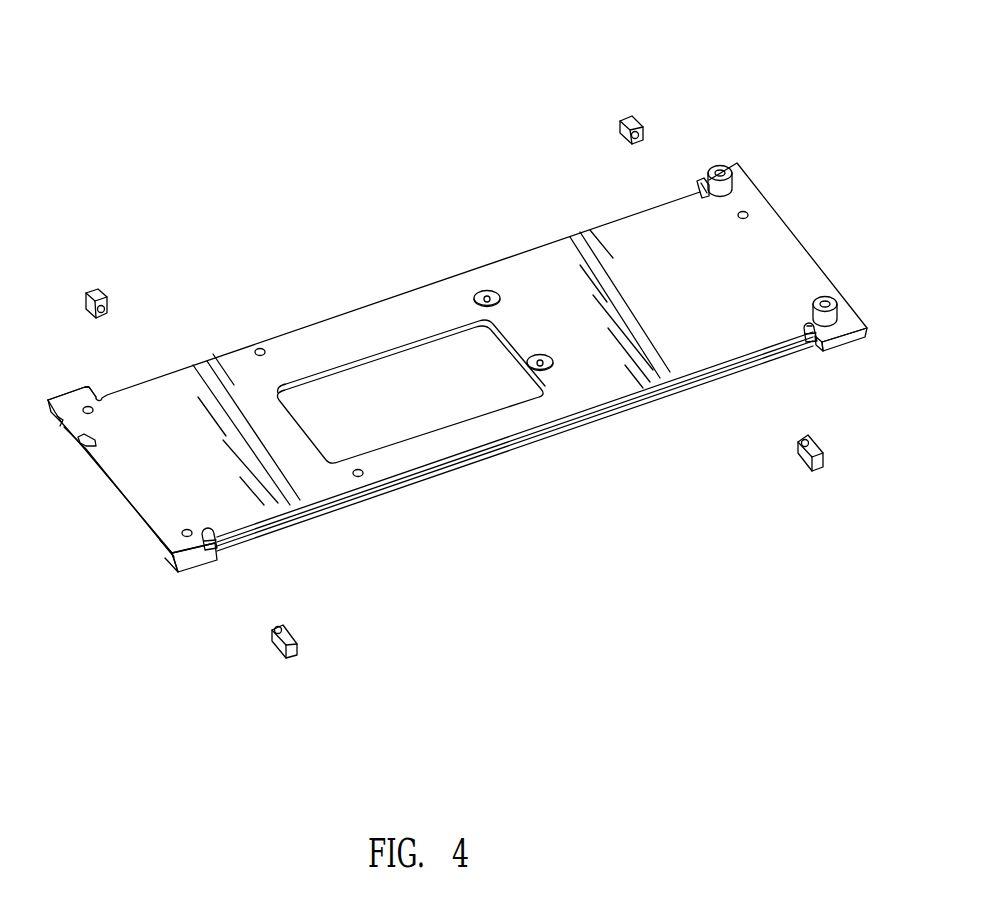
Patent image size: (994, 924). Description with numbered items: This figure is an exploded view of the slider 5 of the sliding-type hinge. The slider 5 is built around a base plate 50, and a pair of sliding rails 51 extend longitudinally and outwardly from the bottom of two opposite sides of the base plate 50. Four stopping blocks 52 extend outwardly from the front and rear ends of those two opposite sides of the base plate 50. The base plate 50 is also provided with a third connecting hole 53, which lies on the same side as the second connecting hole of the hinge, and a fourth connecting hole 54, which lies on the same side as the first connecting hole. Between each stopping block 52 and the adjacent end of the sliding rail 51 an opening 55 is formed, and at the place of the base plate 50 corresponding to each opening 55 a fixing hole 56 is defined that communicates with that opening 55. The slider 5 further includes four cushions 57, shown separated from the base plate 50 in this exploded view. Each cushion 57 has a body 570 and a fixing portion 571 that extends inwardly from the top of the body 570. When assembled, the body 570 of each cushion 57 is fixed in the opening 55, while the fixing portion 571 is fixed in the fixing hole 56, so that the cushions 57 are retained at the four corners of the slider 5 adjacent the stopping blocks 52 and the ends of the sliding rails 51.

The slider 5 is at (206, 40).
The base plate 50 is at (420, 298).
The sliding rail 51 is at (493, 453).
The stopping block 52 is at (705, 181).
The third connecting hole 53 is at (549, 369).
The fourth connecting hole 54 is at (490, 291).
The opening 55 is at (813, 347).
The fixing hole 56 is at (807, 328).
The cushion 57 is at (646, 106).
The body 570 is at (86, 294).
The fixing portion 571 is at (108, 312).